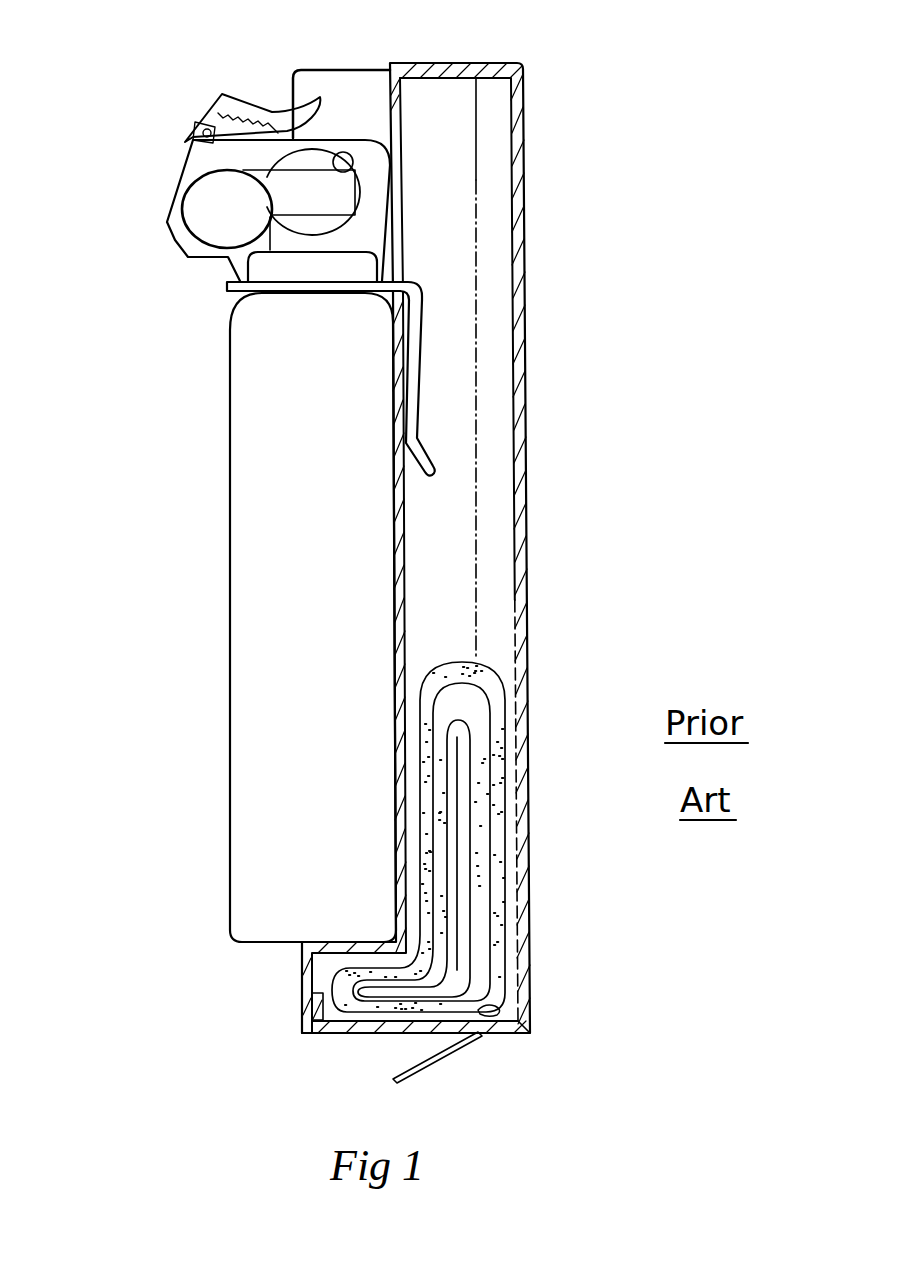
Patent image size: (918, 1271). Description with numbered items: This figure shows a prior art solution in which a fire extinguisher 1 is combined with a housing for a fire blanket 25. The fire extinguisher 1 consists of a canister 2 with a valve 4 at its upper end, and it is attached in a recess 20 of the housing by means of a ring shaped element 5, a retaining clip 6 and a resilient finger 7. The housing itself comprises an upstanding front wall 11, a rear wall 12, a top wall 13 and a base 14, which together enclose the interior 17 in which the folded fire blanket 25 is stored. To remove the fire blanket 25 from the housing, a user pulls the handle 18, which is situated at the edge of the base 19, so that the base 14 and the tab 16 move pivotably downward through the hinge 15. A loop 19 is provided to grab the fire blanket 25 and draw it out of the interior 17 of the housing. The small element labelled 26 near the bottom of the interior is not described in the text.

The fire extinguisher 1 is at (162, 582).
The canister 2 is at (250, 480).
The valve 4 is at (218, 152).
The ring shaped element 5 is at (222, 292).
The retaining clip 6 is at (424, 282).
The resilient finger 7 is at (424, 343).
The upstanding front wall 11 is at (302, 963).
The rear wall 12 is at (523, 548).
The top wall 13 is at (460, 70).
The base 14 is at (358, 1035).
The hinge 15 is at (308, 1036).
The tab 16 is at (312, 1007).
The interior 17 is at (458, 477).
The handle 18 is at (434, 1062).
The loop 19 is at (519, 1034).
The recess 20 is at (348, 88).
The fire blanket 25 is at (494, 783).
The hose end 26 is at (500, 1008).